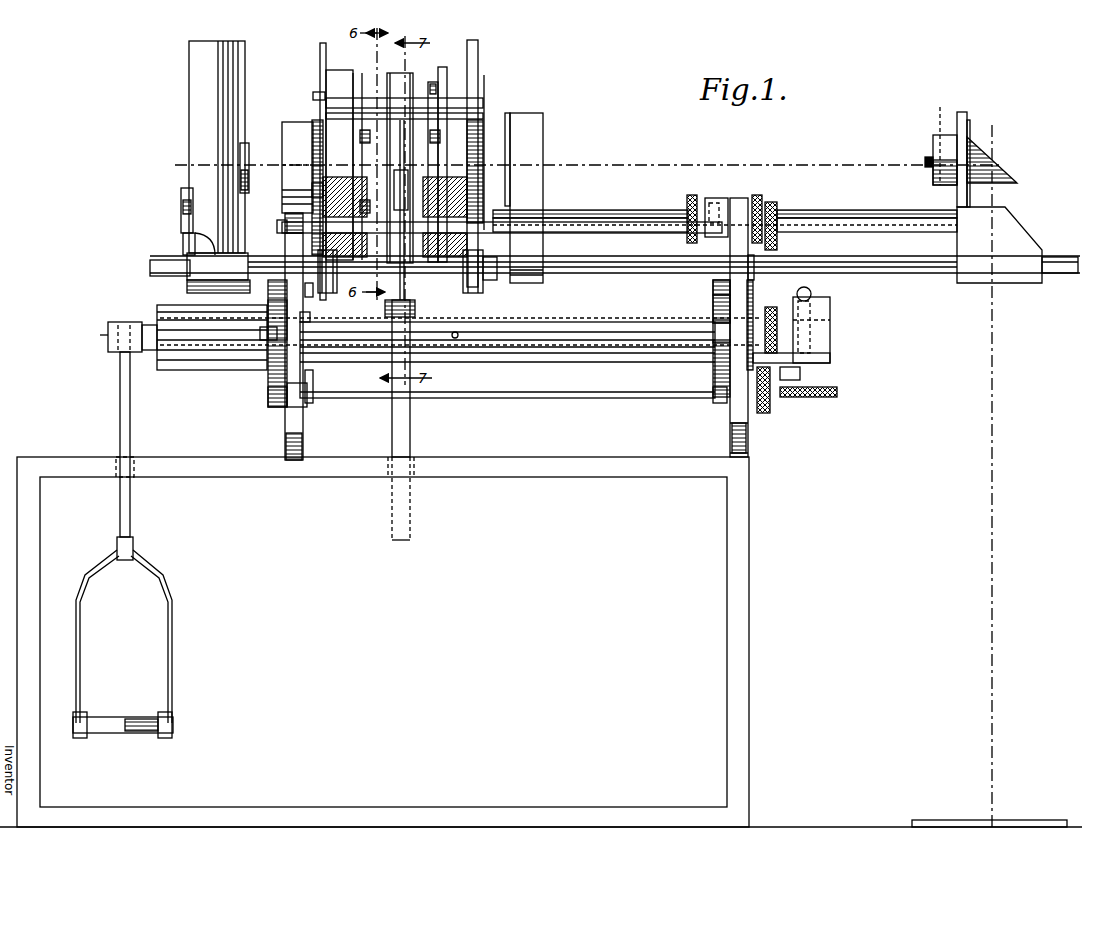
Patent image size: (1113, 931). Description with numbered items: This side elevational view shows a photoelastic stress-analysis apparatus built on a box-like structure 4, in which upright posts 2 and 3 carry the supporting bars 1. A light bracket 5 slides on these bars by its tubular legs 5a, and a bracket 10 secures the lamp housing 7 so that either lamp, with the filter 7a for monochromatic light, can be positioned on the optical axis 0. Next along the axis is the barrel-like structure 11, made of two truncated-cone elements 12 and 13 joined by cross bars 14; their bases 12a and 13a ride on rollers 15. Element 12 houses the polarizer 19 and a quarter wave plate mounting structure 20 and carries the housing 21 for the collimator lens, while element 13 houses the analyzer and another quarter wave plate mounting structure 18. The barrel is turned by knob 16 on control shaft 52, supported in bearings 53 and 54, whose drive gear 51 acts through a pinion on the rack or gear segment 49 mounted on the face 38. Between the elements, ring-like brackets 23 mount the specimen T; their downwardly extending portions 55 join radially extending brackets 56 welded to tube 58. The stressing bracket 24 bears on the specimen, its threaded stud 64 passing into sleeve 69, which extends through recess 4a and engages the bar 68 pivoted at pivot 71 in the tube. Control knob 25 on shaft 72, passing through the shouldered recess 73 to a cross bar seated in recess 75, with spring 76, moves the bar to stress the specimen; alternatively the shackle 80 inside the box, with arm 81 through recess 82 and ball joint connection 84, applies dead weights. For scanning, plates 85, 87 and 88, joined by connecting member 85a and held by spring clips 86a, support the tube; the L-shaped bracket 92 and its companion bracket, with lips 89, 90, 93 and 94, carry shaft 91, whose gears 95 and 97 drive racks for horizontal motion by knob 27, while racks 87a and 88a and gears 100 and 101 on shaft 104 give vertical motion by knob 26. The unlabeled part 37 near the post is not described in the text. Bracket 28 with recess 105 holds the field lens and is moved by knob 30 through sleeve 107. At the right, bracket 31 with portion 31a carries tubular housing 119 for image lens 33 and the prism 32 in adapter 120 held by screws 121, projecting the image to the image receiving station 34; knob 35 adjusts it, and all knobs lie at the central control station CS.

The optical axis 0 is at (624, 165).
The supporting bars 1 is at (920, 273).
The upright post 2 is at (285, 443).
The upright post 3 is at (730, 438).
The box-like structure 4 is at (742, 600).
The recess 4a is at (420, 466).
The light bracket 5 is at (176, 257).
The tubular legs 5a is at (188, 238).
The lamp housing 7 is at (188, 68).
The filter 7a is at (248, 152).
The bracket 10 is at (180, 203).
The barrel-like structure 11 is at (372, 62).
The element 12 is at (340, 80).
The base 12a is at (323, 50).
The element 13 is at (444, 62).
The base 13a is at (478, 45).
The cross bars 14 is at (812, 293).
The rollers 15 is at (320, 265).
The knob 16 is at (750, 262).
The quarter wave plate mounting structure 18 is at (438, 140).
The polarizer 19 is at (410, 98).
The quarter wave plate mounting structure 20 is at (368, 140).
The housing 21 is at (290, 124).
The brackets 23 is at (402, 90).
The stressing bracket 24 is at (402, 160).
The control knob 25 is at (837, 392).
The control knob 26 is at (775, 307).
The control knob 27 is at (770, 408).
The bracket 28 is at (543, 140).
The control knob 30 is at (690, 195).
The bracket 31 is at (1020, 232).
The upwardly extending portion 31a is at (962, 112).
The prism 32 is at (1000, 168).
The image lens 33 is at (939, 136).
The image receiving station 34 is at (1022, 820).
The control knob 35 is at (763, 197).
The cam 37 is at (748, 420).
The face 38 is at (320, 97).
The rack or gear segment 49 is at (312, 146).
The drive gear 51 is at (312, 190).
The control shaft 52 is at (560, 232).
The bearing 53 is at (288, 222).
The bearing 54 is at (716, 236).
The downwardly extending portions 55 is at (408, 240).
The radially extending brackets 56 is at (415, 306).
The tube 58 is at (612, 305).
The threaded stud 64 is at (392, 440).
The bar 68 is at (145, 320).
The sleeve 69 is at (410, 430).
The pivot 71 is at (460, 340).
The shaft 72 is at (830, 330).
The shouldered recess 73 is at (832, 340).
The recess 75 is at (812, 308).
The spring 76 is at (830, 360).
The shackle 80 is at (172, 583).
The arm 81 is at (131, 518).
The recess 82 is at (114, 462).
The ball joint connection 84 is at (112, 322).
The plate 85 is at (110, 352).
The connecting member 85a is at (310, 318).
The spring clips 86a is at (268, 312).
The plate 87 is at (268, 328).
The rack 87a is at (785, 375).
The plate 88 is at (721, 287).
The rack 88a is at (713, 372).
The lip 89 is at (713, 290).
The lip 90 is at (268, 396).
The shaft 91 is at (350, 398).
The L-shaped bracket 92 is at (310, 405).
The lip 93 is at (756, 272).
The lip 94 is at (713, 402).
The gear 95 is at (287, 400).
The gear 97 is at (753, 302).
The gear 100 is at (278, 333).
The gear 101 is at (268, 340).
The shaft 104 is at (500, 340).
The recess 105 is at (713, 326).
The sleeve 107 is at (625, 210).
The tubular housing 119 is at (935, 185).
The adapter 120 is at (971, 125).
The screws 121 is at (926, 158).
The central control station CS is at (737, 196).
The specimen T is at (395, 165).